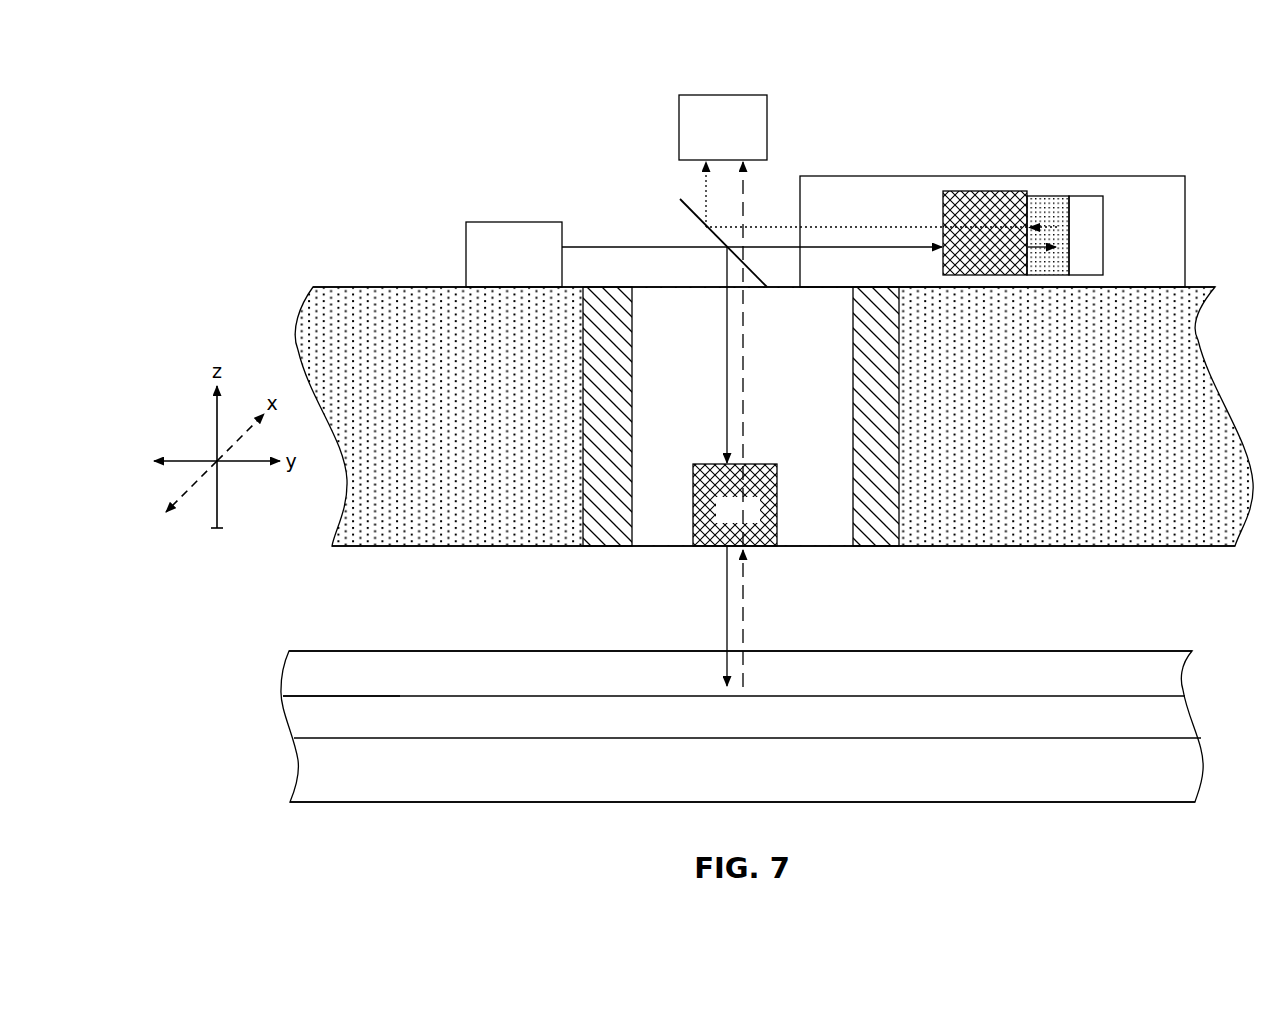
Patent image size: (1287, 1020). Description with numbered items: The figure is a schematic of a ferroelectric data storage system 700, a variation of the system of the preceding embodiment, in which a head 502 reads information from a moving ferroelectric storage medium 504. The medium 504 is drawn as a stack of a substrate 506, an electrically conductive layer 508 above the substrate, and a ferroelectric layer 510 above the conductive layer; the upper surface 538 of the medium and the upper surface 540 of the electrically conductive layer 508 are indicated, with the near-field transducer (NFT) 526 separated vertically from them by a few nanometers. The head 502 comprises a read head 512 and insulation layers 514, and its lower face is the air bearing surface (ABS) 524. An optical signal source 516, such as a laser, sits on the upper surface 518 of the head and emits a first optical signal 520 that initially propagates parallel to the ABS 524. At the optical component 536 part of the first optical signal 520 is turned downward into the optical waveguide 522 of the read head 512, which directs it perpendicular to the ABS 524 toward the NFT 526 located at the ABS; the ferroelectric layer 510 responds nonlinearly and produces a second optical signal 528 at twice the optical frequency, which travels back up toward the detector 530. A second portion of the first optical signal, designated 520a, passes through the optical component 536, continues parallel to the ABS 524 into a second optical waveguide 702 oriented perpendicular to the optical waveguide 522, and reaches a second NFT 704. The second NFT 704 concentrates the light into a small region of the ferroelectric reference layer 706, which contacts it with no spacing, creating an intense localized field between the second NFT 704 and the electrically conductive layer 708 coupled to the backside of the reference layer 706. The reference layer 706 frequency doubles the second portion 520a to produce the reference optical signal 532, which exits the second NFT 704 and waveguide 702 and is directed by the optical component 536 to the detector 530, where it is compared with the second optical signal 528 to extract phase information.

The ferroelectric data storage system 700 is at (276, 79).
The head 502 is at (730, 417).
The ferroelectric storage medium 504 is at (682, 693).
The substrate 506 is at (972, 785).
The electrically conductive layer 508 is at (972, 728).
The ferroelectric layer 510 is at (972, 684).
The read head 512 is at (878, 548).
The insulation layers 514 is at (470, 531).
The optical signal source 516 is at (531, 269).
The upper surface 518 is at (371, 284).
The first optical signal 520 is at (603, 244).
The second portion of the first optical signal 520a is at (820, 249).
The optical waveguide 522 is at (840, 546).
The air bearing surface 524 is at (1151, 550).
The near-field transducer 526 is at (757, 520).
The second optical signal 528 is at (743, 427).
The detector 530 is at (704, 139).
The reference optical signal 532 is at (872, 225).
The optical component 536 is at (681, 195).
The upper surface of the ferroelectric storage medium 538 is at (447, 648).
The upper surface of the electrically conductive layer 540 is at (312, 692).
The second optical waveguide 702 is at (813, 185).
The second NFT 704 is at (991, 203).
The ferroelectric reference layer 706 is at (1050, 204).
The electrically conductive layer 708 is at (1090, 207).